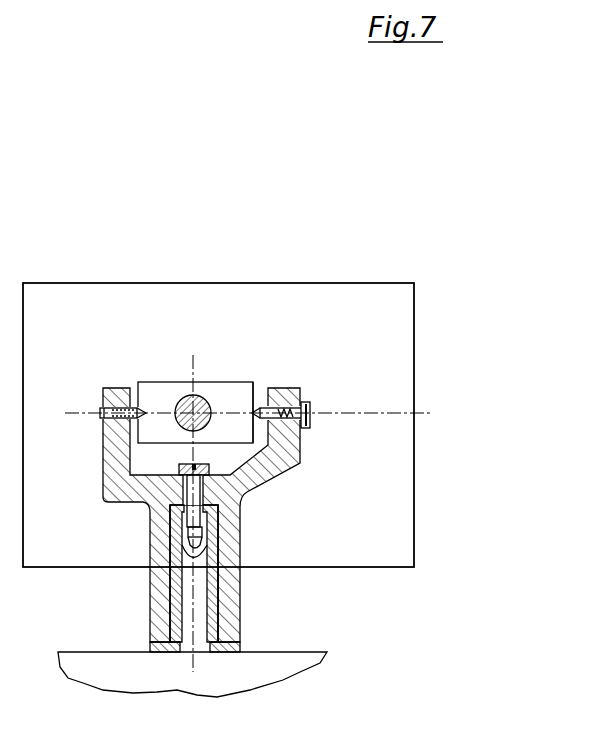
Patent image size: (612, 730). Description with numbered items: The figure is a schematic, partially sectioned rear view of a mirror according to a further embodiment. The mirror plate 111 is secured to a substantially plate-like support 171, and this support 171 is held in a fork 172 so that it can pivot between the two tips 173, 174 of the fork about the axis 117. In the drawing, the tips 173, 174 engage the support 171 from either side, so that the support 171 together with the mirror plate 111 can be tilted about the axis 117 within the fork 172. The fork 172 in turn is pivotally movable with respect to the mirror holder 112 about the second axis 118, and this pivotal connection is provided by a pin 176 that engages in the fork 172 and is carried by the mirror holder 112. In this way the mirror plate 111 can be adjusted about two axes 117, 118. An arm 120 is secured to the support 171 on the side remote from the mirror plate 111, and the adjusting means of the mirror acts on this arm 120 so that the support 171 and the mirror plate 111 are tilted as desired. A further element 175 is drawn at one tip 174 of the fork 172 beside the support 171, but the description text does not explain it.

The housing plate 111 is at (404, 334).
The base 112 is at (273, 670).
The axis / center line 117 is at (291, 492).
The tubular column 118 is at (192, 613).
The shaft 120 is at (200, 404).
The bearing block 171 is at (231, 305).
The holder 172 is at (275, 467).
The adjusting screw 173 is at (147, 407).
The block edge 174 is at (323, 305).
The knurled adjusting screw 175 is at (357, 297).
The threaded sleeve 176 is at (200, 577).